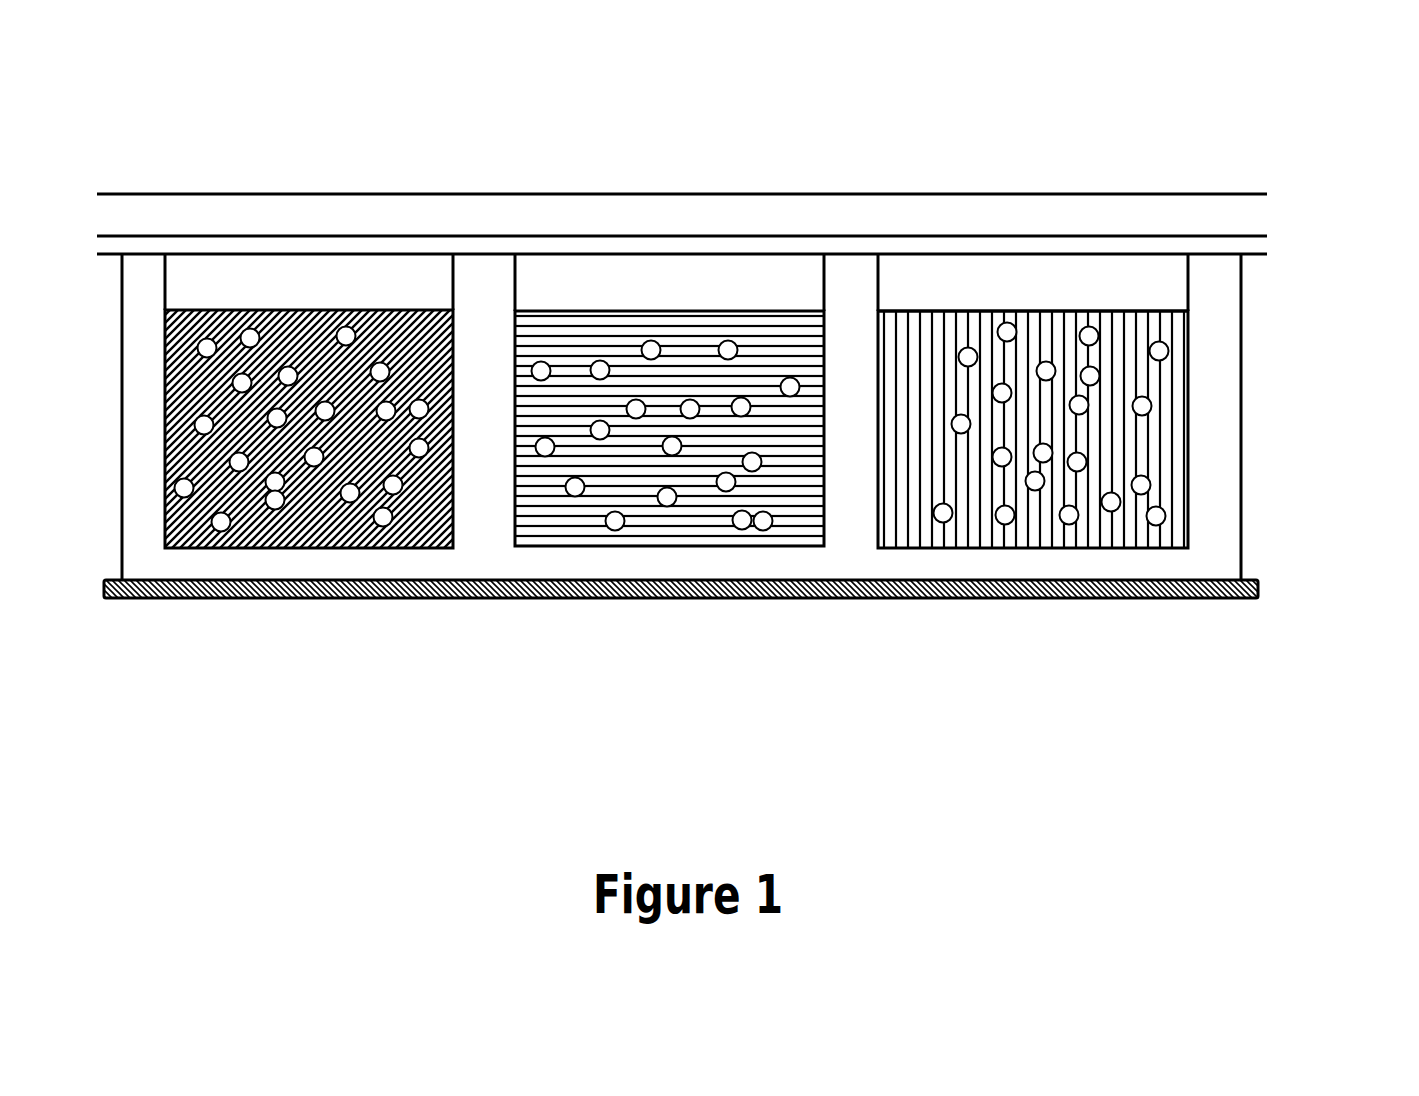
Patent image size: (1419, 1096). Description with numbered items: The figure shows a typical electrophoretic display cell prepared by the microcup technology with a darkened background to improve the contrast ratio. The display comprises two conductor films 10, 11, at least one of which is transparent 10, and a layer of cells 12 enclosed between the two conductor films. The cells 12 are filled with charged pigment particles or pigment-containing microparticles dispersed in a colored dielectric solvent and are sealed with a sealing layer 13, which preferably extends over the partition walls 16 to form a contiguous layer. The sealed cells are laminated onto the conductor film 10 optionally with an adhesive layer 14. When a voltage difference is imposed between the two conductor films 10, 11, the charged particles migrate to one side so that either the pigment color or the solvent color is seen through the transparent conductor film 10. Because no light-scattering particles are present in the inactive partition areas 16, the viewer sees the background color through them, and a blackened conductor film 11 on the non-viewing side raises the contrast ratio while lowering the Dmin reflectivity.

The transparent conductor film 10 is at (958, 215).
The conductor film 11 is at (1258, 589).
The layer of cells 12 is at (1162, 423).
The sealing layer 13 is at (1092, 283).
The adhesive layer 14 is at (1255, 243).
The partition walls 16 is at (850, 288).